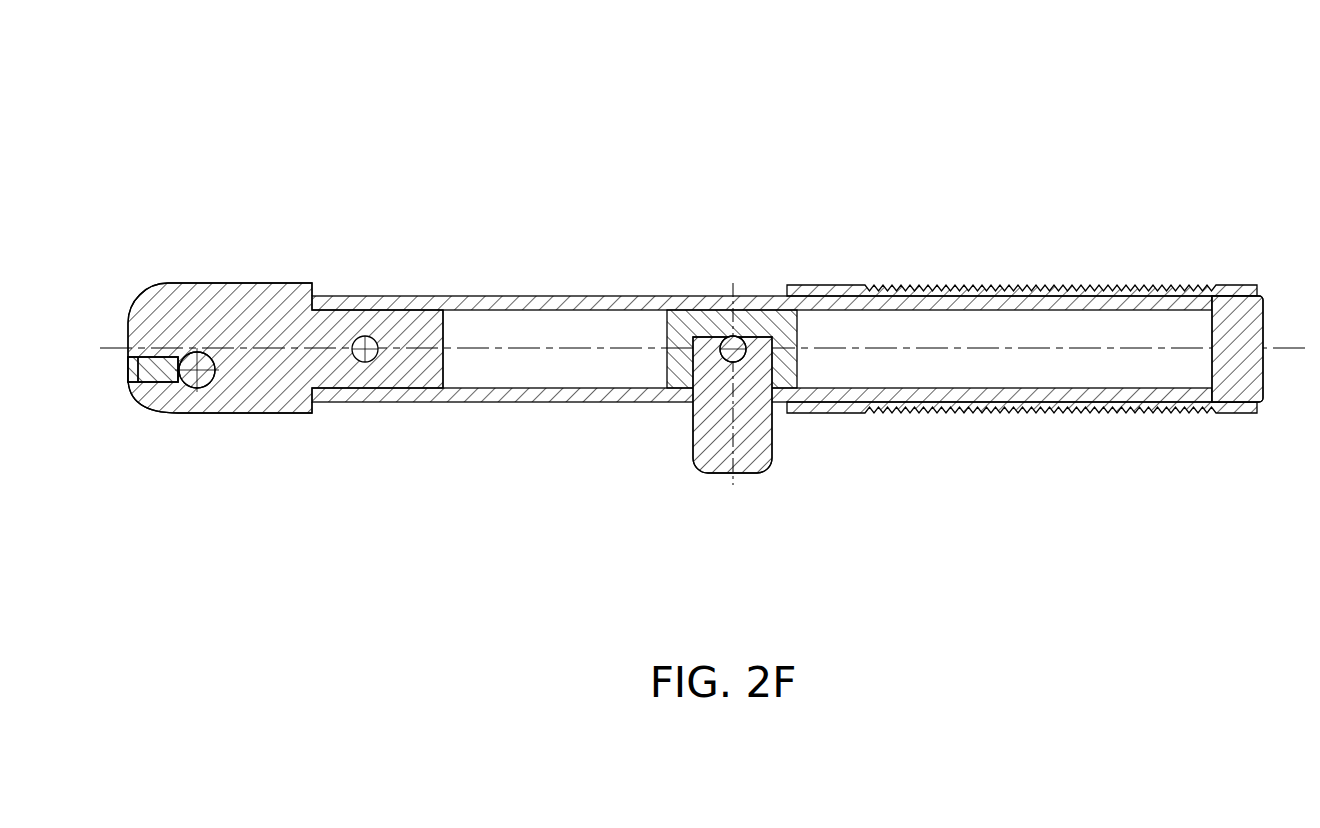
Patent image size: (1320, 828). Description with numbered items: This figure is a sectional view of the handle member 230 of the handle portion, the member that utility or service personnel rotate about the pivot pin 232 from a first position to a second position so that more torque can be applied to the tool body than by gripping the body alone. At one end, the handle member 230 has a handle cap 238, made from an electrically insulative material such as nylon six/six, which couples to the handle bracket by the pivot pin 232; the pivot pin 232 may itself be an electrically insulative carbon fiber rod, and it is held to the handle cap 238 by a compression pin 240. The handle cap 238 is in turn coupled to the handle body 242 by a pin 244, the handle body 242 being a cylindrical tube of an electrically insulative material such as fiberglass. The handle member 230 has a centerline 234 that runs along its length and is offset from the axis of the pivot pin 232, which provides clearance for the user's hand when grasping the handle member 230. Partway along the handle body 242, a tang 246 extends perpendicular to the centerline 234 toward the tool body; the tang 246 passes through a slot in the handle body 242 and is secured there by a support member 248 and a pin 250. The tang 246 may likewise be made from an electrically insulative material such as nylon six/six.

The handle member 230 is at (788, 156).
The pivot pin 232 is at (213, 383).
The centerline 234 is at (1286, 348).
The handle cap 238 is at (240, 284).
The compression pin 240 is at (130, 372).
The handle body 242 is at (535, 296).
The pin 244 is at (375, 361).
The tang 246 is at (690, 452).
The support member 248 is at (745, 323).
The pin 250 is at (718, 338).